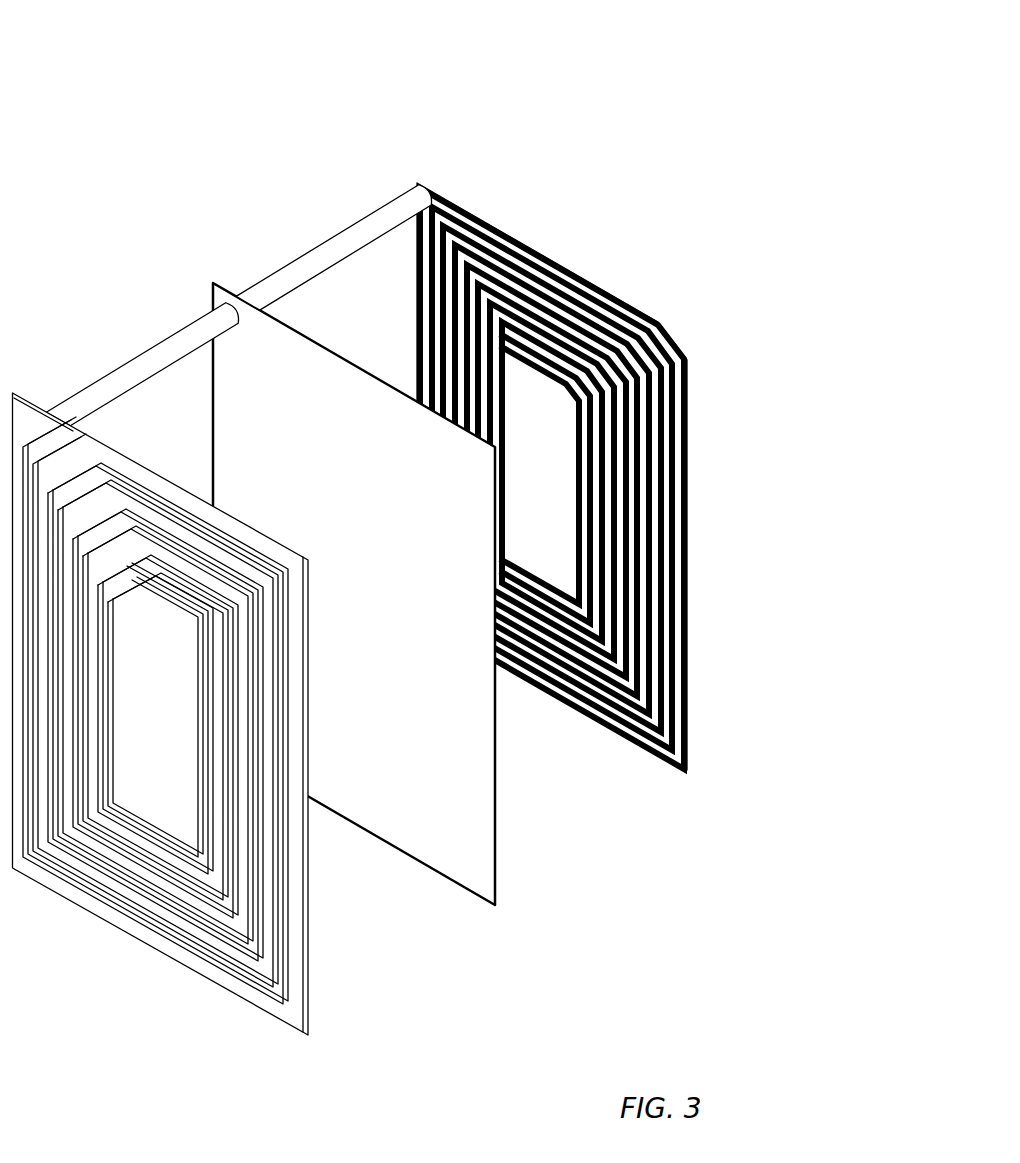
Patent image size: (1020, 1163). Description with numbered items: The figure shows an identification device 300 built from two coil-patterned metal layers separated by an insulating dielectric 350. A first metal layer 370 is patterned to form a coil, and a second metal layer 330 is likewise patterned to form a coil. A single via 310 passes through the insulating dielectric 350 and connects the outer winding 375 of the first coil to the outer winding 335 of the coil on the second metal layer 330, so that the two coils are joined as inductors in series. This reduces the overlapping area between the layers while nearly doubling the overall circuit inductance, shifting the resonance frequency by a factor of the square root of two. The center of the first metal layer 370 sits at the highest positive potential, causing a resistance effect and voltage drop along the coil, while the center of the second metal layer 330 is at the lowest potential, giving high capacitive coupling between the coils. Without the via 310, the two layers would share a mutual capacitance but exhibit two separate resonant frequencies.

The identification device 300 is at (195, 121).
The via 310 is at (350, 242).
The second metal layer 330 is at (171, 806).
The outer winding 335 is at (74, 911).
The insulating dielectric 350 is at (415, 701).
The first metal layer 370 is at (556, 559).
The outer winding 375 is at (700, 451).